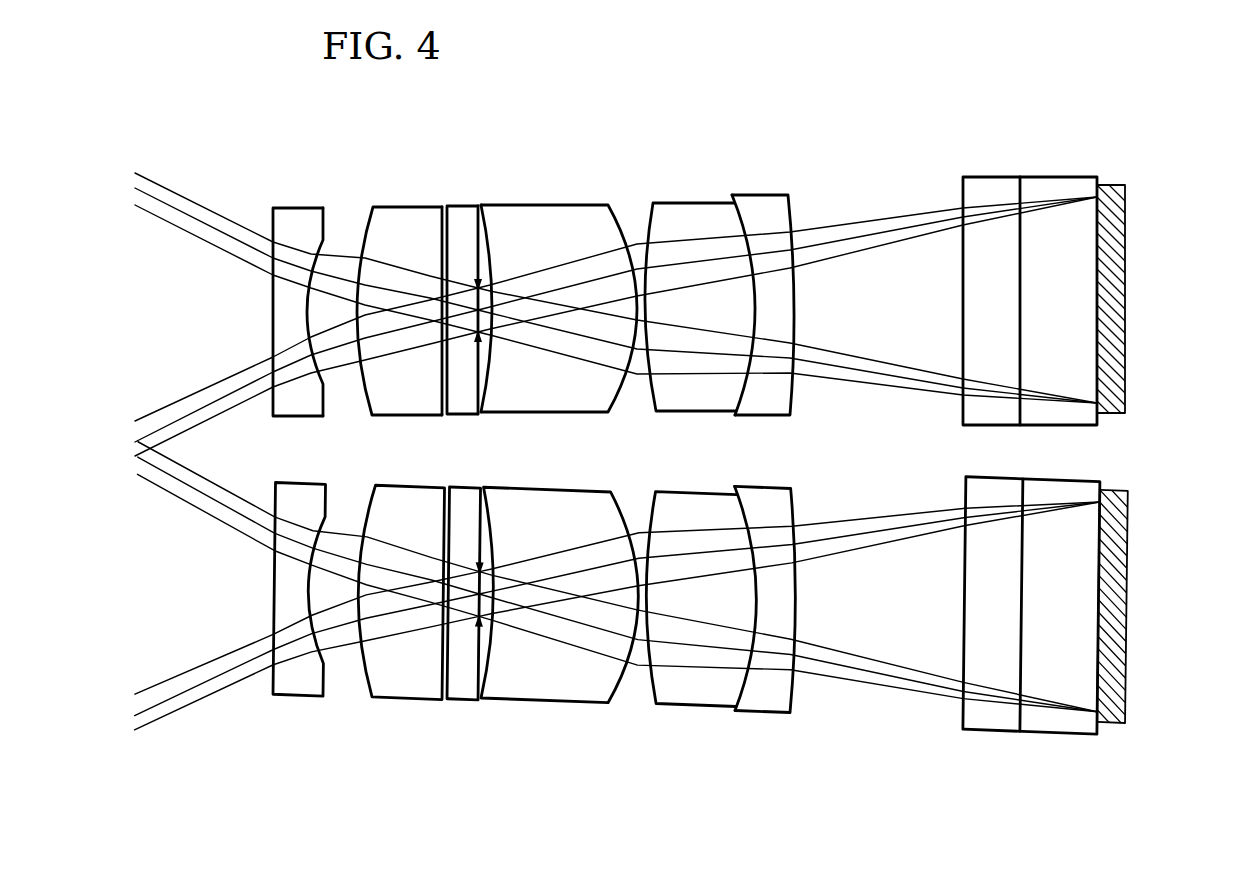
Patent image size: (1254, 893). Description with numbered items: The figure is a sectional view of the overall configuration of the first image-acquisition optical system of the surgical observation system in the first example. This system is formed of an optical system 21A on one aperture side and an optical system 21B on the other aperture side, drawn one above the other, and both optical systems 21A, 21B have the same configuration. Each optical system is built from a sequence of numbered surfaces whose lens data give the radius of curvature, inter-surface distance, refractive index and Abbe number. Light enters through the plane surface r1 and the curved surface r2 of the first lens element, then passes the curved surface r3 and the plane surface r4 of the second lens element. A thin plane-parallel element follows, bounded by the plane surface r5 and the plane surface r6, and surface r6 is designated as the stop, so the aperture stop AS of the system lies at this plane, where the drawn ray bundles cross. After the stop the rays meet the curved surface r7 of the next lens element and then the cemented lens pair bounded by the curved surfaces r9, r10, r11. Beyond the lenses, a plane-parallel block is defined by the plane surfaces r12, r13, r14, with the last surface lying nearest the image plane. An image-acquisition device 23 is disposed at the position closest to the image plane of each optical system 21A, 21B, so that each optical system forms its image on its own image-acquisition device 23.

The optical system 21A is at (1154, 117).
The optical system 21B is at (1154, 785).
The surface 1 r1 is at (273, 215).
The surface 2 r2 is at (323, 243).
The surface 3 r3 is at (368, 220).
The surface 4 r4 is at (446, 227).
The surface 5 r5 is at (445, 392).
The surface 6 (stop) r6 is at (479, 247).
The surface 7 r7 is at (486, 382).
The surface 9 r9 is at (618, 212).
The surface 10 r10 is at (648, 210).
The surface 11 r11 is at (741, 212).
The surface 12 r12 is at (792, 210).
The surface 13 r13 is at (962, 192).
The surface 14 r14 is at (1021, 190).
The image-acquisition device 23 is at (1125, 207).
The aperture stop AS is at (478, 628).